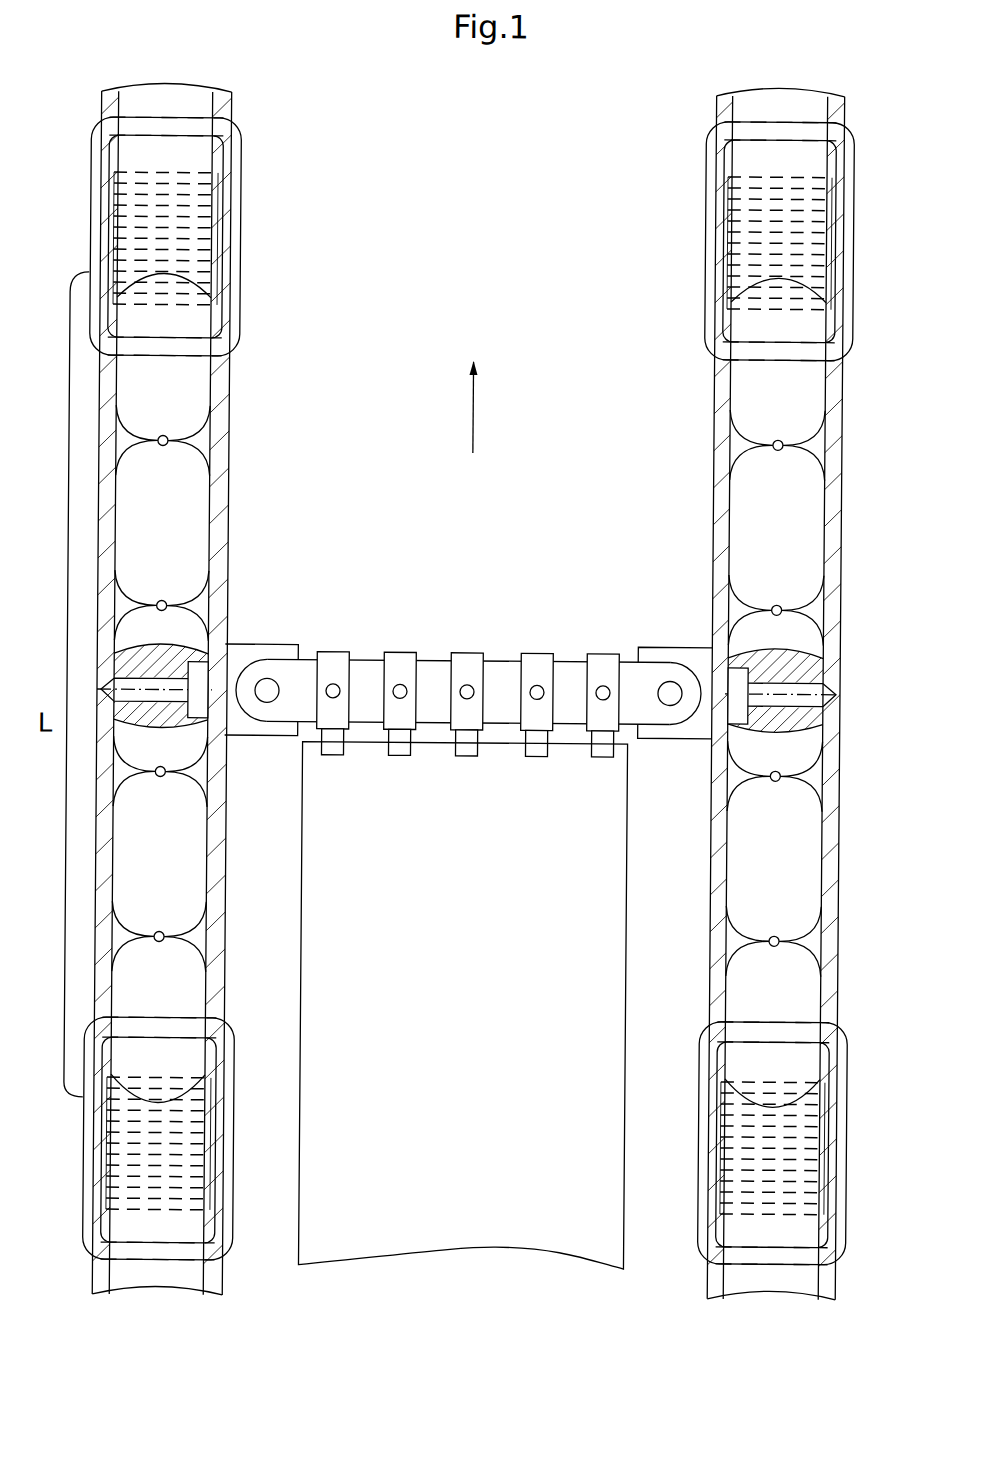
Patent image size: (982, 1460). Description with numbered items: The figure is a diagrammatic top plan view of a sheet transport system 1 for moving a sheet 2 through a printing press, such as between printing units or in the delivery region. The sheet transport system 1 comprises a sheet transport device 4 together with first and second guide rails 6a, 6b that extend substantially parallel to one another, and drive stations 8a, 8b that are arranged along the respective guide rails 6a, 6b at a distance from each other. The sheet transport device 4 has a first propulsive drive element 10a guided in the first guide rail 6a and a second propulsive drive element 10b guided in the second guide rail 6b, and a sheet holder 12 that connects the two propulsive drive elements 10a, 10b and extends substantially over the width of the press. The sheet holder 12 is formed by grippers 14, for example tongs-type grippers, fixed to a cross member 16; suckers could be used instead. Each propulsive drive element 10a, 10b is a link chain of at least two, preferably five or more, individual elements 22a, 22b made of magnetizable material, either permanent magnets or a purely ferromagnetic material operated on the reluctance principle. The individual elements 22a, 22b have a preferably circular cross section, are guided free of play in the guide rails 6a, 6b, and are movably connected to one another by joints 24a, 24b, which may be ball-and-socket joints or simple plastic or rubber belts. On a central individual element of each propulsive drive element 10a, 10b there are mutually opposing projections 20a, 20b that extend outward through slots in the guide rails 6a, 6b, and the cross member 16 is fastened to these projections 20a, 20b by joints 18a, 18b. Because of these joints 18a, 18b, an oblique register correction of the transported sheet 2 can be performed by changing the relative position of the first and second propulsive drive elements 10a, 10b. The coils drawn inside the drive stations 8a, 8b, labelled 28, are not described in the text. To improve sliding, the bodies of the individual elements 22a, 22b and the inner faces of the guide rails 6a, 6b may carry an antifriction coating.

The sheet transport system 1 is at (603, 110).
The sheet 2 is at (452, 966).
The sheet transport device 4 is at (609, 634).
The first guide rail 6a is at (722, 455).
The second guide rail 6b is at (218, 418).
The drive station 8a is at (711, 257).
The drive station 8b is at (235, 230).
The first propulsive drive element 10a is at (764, 555).
The second propulsive drive element 10b is at (192, 550).
The sheet holder 12 is at (372, 650).
The grippers 14 is at (537, 665).
The cross member 16 is at (573, 672).
The joint 18a is at (670, 702).
The joint 18b is at (268, 702).
The projection 20a is at (700, 659).
The projection 20b is at (243, 654).
The individual elements 22a is at (772, 892).
The individual elements 22b is at (172, 875).
The joints 24a is at (775, 945).
The joints 24b is at (165, 945).
The heating coil 28 is at (190, 176).